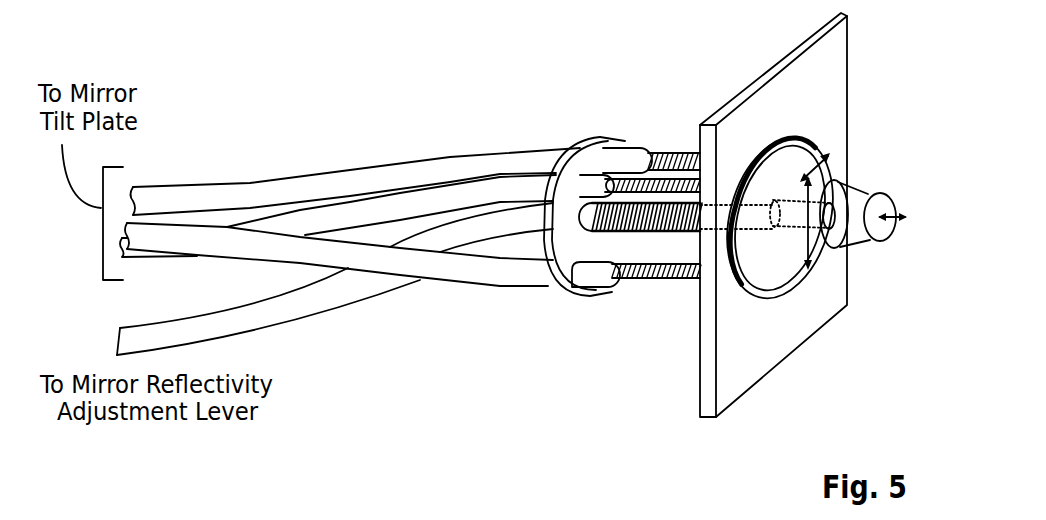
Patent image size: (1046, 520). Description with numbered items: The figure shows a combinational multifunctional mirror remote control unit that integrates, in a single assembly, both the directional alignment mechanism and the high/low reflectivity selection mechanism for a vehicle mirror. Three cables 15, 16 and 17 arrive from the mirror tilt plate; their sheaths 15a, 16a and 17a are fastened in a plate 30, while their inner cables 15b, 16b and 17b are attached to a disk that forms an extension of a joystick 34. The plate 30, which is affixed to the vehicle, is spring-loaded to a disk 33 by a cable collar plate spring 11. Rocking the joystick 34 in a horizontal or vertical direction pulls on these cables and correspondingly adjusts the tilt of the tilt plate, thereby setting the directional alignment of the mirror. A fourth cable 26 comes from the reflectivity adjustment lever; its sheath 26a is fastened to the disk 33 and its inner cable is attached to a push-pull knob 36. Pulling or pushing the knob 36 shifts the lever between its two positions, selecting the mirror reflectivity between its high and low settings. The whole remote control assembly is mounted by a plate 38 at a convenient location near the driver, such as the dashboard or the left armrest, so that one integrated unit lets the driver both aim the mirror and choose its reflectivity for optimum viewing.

The cable collar plate spring 11 is at (641, 229).
The cable 15 is at (353, 210).
The sheath 15a is at (592, 176).
The cable 15b is at (598, 177).
The cable 16 is at (281, 189).
The sheath 16a is at (637, 150).
The cable 16b is at (665, 151).
The cable 17 is at (248, 247).
The sheath 17a is at (585, 290).
The cable 17b is at (659, 280).
The cable 26 is at (282, 302).
The sheath 26a is at (737, 200).
The plate 30 is at (553, 296).
The disk 33 is at (803, 157).
The joystick 34 is at (845, 185).
The push-pull knob 36 is at (870, 242).
The plate 38 is at (848, 103).